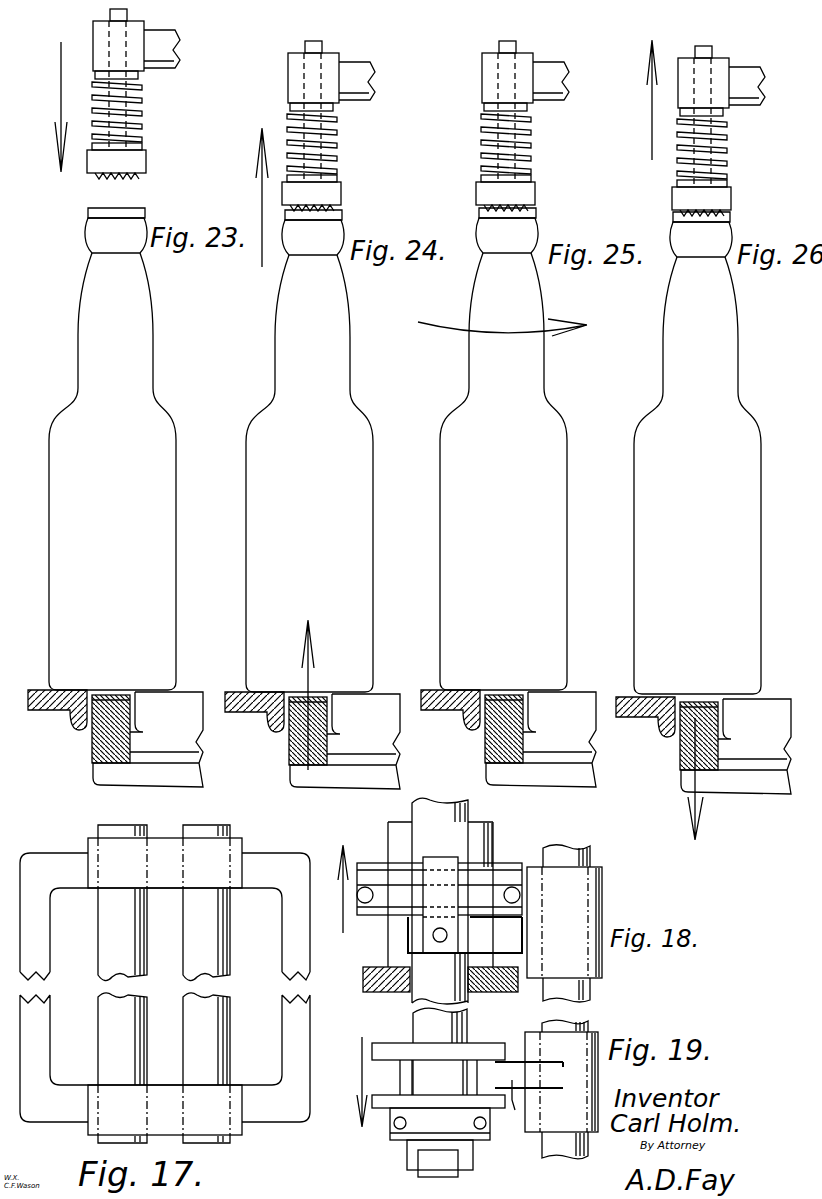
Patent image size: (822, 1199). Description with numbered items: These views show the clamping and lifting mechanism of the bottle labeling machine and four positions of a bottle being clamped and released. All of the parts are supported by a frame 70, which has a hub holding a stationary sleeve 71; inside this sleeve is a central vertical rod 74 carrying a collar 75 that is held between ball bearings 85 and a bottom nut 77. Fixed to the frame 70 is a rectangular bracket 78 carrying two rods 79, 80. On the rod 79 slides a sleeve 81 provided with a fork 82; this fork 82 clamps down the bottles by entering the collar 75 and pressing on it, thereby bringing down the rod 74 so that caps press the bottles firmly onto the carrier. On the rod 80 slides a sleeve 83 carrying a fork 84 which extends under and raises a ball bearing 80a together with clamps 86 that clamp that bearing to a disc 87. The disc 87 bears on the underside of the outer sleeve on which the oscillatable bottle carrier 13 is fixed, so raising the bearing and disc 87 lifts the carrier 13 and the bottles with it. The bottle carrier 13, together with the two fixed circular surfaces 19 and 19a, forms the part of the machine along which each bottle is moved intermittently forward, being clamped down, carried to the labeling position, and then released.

In FIG. 23, the oscillatable bottle carrier 13 is at (72, 752).
In FIG. 24, the oscillatable bottle carrier 13 is at (272, 733).
In FIG. 25, the oscillatable bottle carrier 13 is at (469, 730).
In FIG. 26, the oscillatable bottle carrier 13 is at (664, 737).
In FIG. 23, the fixed surface 19 is at (40, 692).
In FIG. 24, the fixed surface 19 is at (254, 714).
In FIG. 25, the fixed surface 19 is at (450, 694).
In FIG. 26, the fixed surface 19 is at (646, 703).
In FIG. 23, the fixed surface 19a is at (183, 700).
In FIG. 24, the fixed surface 19a is at (351, 725).
In FIG. 25, the fixed surface 19a is at (546, 726).
In FIG. 26, the fixed surface 19a is at (736, 731).
In FIG. 18, the frame 70 is at (363, 983).
In FIG. 18, the stationary sleeve 71 is at (400, 833).
In FIG. 18, the central vertical rod 74 is at (432, 806).
In FIG. 19, the central vertical rod 74 is at (468, 1030).
In FIG. 19, the collar 75 is at (400, 1048).
In FIG. 19, the bottom nut 77 is at (462, 1160).
In FIG. 17, the rectangular bracket 78 is at (265, 862).
In FIG. 17, the rod 79 is at (104, 946).
In FIG. 19, the rod 79 is at (572, 1158).
In FIG. 17, the rod 80 is at (217, 940).
In FIG. 18, the rod 80a is at (553, 848).
In FIG. 19, the sleeve 81 is at (603, 1072).
In FIG. 19, the fork 82 is at (513, 1100).
In FIG. 18, the sleeve 83 is at (598, 880).
In FIG. 18, the fork 84 is at (417, 945).
In FIG. 18, the ball bearings 85 is at (506, 878).
In FIG. 19, the ball bearings 85 is at (392, 1128).
In FIG. 18, the clamps 86 is at (446, 851).
In FIG. 18, the disc 87 is at (377, 862).